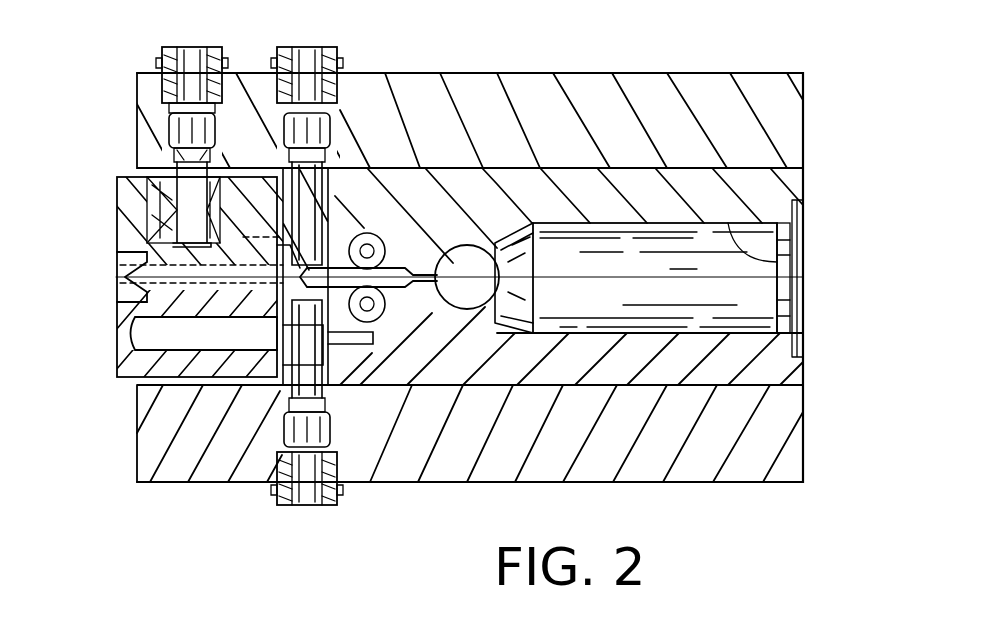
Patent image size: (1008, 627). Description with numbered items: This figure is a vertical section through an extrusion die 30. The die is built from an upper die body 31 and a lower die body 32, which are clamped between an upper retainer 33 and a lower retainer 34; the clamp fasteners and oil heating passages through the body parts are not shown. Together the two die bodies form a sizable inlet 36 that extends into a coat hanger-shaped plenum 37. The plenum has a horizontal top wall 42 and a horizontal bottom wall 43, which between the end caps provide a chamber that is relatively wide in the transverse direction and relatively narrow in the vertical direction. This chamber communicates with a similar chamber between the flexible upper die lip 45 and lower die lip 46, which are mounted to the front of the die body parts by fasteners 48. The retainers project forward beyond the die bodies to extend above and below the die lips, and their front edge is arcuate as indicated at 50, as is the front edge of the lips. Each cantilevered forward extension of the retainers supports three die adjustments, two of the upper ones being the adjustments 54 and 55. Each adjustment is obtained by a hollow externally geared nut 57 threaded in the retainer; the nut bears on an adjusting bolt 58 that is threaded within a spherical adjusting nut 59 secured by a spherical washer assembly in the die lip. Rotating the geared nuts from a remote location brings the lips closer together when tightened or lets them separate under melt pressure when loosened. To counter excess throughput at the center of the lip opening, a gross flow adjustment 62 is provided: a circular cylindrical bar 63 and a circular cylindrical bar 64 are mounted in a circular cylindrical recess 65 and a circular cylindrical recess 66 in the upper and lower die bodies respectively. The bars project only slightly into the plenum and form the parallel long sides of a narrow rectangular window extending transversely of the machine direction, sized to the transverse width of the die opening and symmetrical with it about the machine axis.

The extrusion die 30 is at (826, 116).
The upper die body 31 is at (778, 191).
The lower die body 32 is at (798, 358).
The upper retainer 33 is at (775, 92).
The lower retainer 34 is at (775, 452).
The inlet 36 is at (782, 268).
The plenum 37 is at (445, 240).
The top wall 42 is at (373, 232).
The bottom wall 43 is at (528, 322).
The upper die lip 45 is at (114, 233).
The lower die lip 46 is at (112, 347).
The fasteners 48 is at (332, 378).
The arcuate front edge 50 is at (137, 100).
The die adjustment 54 is at (170, 52).
The die adjustment 55 is at (293, 48).
The externally geared nut 57 is at (170, 92).
The adjusting bolt 58 is at (197, 132).
The spherical adjusting nut 59 is at (147, 200).
The gross flow adjustment 62 is at (404, 200).
The circular cylindrical bar 63 is at (400, 243).
The circular cylindrical bar 64 is at (364, 330).
The circular cylindrical recess 65 is at (431, 258).
The circular cylindrical recess 66 is at (403, 308).